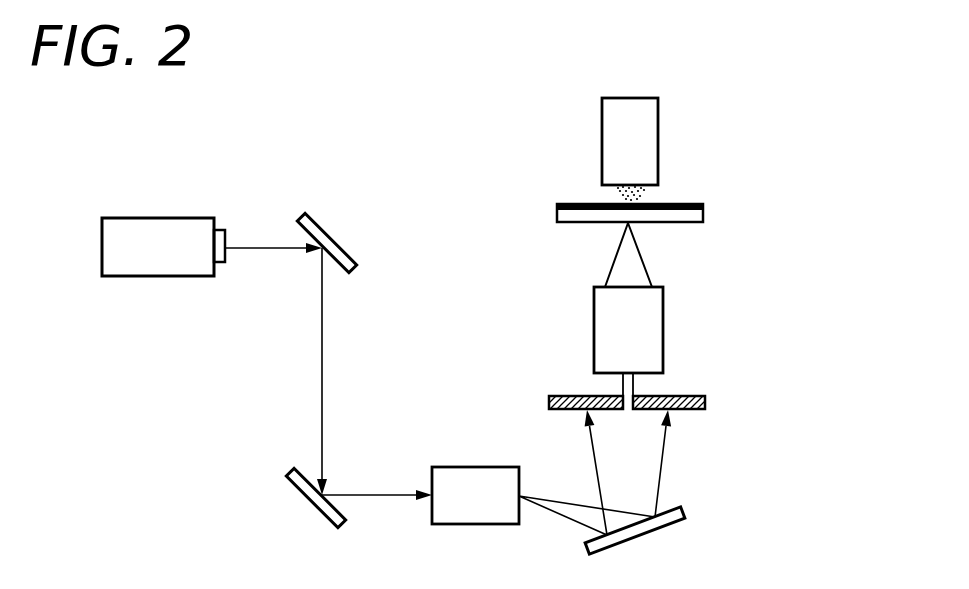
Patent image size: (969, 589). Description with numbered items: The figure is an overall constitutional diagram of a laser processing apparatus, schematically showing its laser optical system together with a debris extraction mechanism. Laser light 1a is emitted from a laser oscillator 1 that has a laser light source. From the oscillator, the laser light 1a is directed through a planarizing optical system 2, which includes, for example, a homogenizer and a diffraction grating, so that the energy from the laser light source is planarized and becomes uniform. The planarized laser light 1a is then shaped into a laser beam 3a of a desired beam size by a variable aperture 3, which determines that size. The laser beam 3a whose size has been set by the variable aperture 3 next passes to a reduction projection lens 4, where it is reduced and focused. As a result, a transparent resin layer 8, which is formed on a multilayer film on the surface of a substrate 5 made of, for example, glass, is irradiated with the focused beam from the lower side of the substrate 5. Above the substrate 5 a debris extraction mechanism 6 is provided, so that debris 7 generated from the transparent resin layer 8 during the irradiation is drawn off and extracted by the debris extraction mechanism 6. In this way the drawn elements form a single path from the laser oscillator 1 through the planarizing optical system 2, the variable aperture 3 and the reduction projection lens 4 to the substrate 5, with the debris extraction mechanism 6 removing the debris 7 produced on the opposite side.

The laser oscillator 1 is at (130, 218).
The laser light 1a is at (262, 247).
The planarizing optical system 2 is at (352, 455).
The variable aperture 3 is at (705, 402).
The laser beam 3a is at (635, 383).
The reduction projection lens 4 is at (663, 318).
The substrate 5 is at (703, 213).
The debris extraction mechanism 6 is at (658, 130).
The debris 7 is at (647, 193).
The transparent resin layer 8 is at (680, 204).